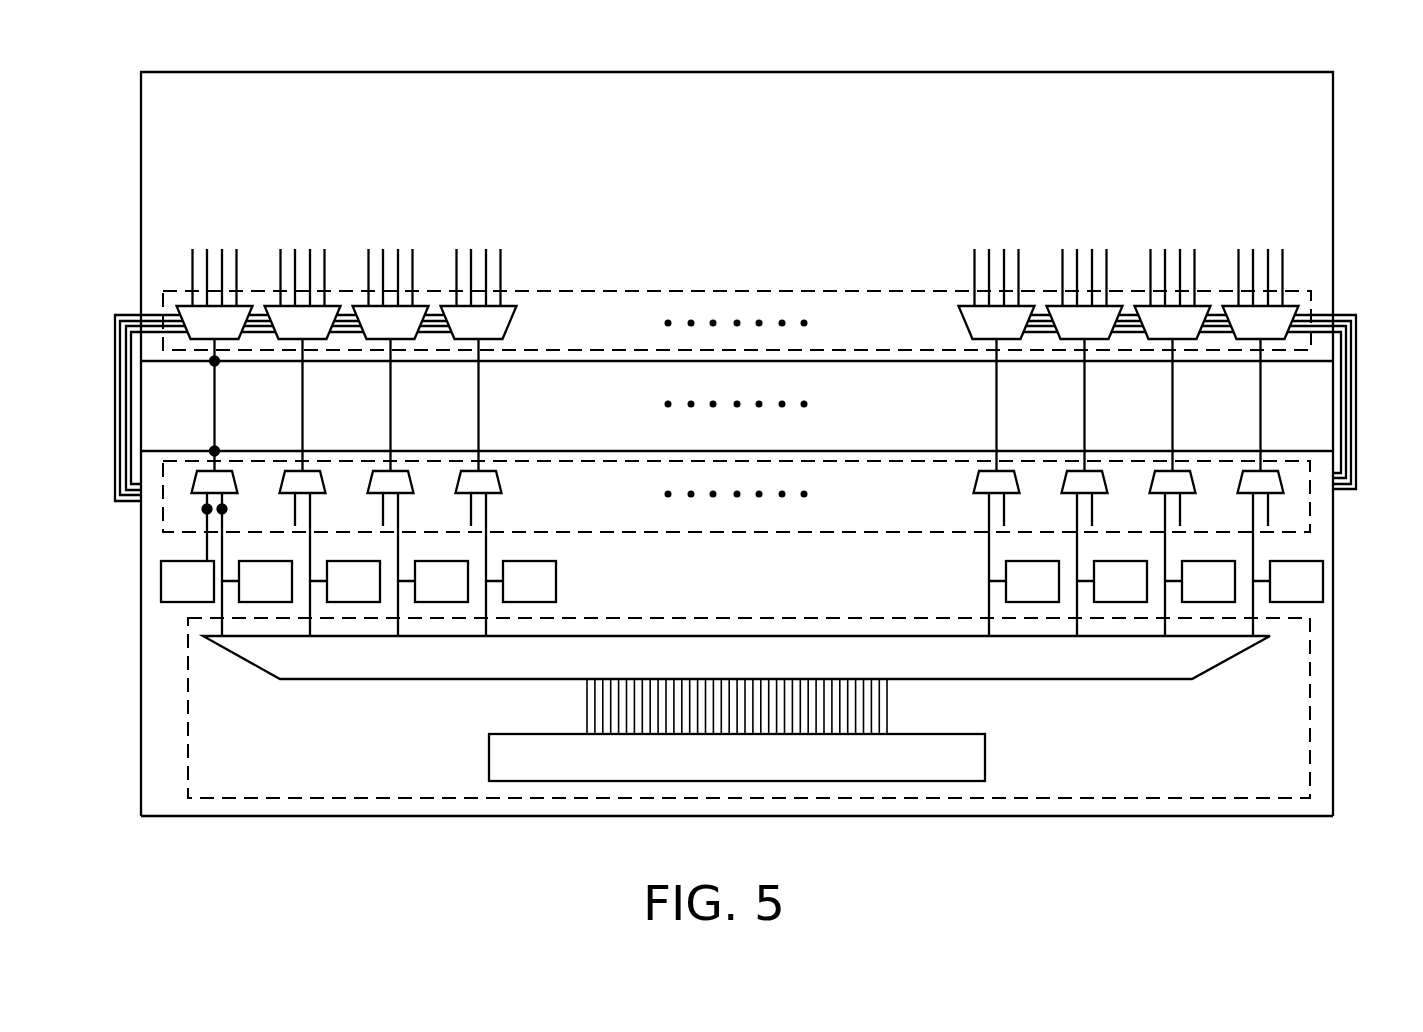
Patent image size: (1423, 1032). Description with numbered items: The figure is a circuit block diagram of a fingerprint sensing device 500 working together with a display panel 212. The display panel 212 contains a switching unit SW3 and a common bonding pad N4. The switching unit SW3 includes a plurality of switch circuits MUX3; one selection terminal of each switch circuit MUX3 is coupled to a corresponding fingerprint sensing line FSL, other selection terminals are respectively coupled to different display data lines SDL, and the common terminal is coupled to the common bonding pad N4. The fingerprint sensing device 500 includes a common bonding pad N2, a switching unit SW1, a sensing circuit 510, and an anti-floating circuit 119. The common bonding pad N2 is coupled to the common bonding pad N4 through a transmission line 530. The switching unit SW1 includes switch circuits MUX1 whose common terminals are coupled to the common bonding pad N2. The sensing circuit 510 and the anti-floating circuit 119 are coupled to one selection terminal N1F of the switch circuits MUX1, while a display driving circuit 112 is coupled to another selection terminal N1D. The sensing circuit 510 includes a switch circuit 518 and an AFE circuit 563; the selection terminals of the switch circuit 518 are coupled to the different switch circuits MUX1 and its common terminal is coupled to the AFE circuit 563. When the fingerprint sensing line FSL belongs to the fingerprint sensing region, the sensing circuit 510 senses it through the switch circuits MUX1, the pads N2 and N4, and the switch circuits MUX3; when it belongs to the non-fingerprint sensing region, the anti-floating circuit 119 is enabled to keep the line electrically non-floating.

The display panel 212 is at (1238, 72).
The fingerprint sensing device 500 is at (1183, 816).
The sensing circuit 510 is at (1237, 797).
The switch circuit 518 is at (1233, 658).
The AFE circuit 563 is at (985, 757).
The transmission line 530 is at (213, 419).
The switch circuit MUX3 is at (188, 313).
The switch circuit MUX1 is at (194, 481).
The switching unit SW3 is at (161, 303).
The switching unit SW1 is at (162, 512).
The display data line SDL is at (222, 247).
The fingerprint sensing line FSL is at (237, 265).
The common bonding pad N4 is at (216, 364).
The common bonding pad N2 is at (216, 448).
The selection terminal N1D is at (206, 512).
The selection terminal N1F is at (221, 512).
The display driving circuit 112 is at (187, 581).
The anti-floating circuit 119 is at (772, 581).